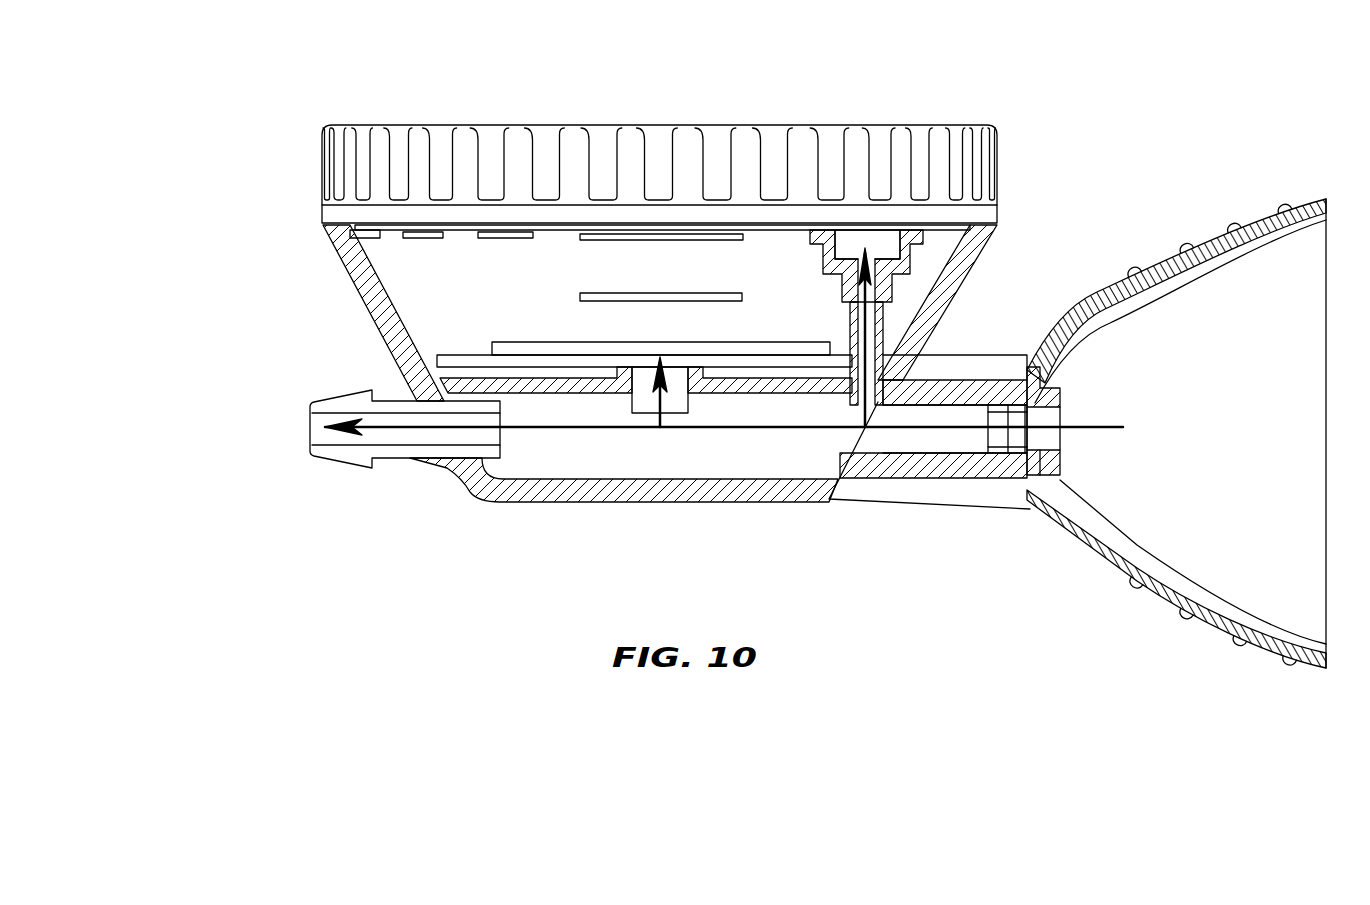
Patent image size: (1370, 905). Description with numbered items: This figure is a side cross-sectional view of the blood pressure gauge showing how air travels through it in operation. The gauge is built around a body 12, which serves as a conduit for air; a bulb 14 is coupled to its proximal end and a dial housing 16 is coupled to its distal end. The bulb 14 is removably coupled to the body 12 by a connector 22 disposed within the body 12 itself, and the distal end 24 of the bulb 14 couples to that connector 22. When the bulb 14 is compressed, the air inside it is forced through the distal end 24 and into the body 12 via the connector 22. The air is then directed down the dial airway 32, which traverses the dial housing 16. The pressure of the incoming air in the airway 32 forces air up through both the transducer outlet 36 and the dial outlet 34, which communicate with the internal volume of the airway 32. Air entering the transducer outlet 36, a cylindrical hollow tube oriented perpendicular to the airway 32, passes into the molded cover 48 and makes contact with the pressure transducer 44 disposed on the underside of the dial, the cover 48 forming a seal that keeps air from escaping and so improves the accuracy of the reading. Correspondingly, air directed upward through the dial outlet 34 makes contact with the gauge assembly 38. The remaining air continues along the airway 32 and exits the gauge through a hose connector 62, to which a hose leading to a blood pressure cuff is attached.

The body 12 is at (940, 473).
The bulb 14 is at (1222, 553).
The dial housing 16 is at (387, 325).
The connector 22 is at (1043, 453).
The distal end 24 is at (1087, 525).
The dial airway 32 is at (475, 440).
The dial outlet 34 is at (622, 380).
The transducer outlet 36 is at (880, 337).
The gauge assembly 38 is at (575, 345).
The pressure transducer 44 is at (882, 243).
The molded cover 48 is at (910, 263).
The hose connector 62 is at (333, 455).